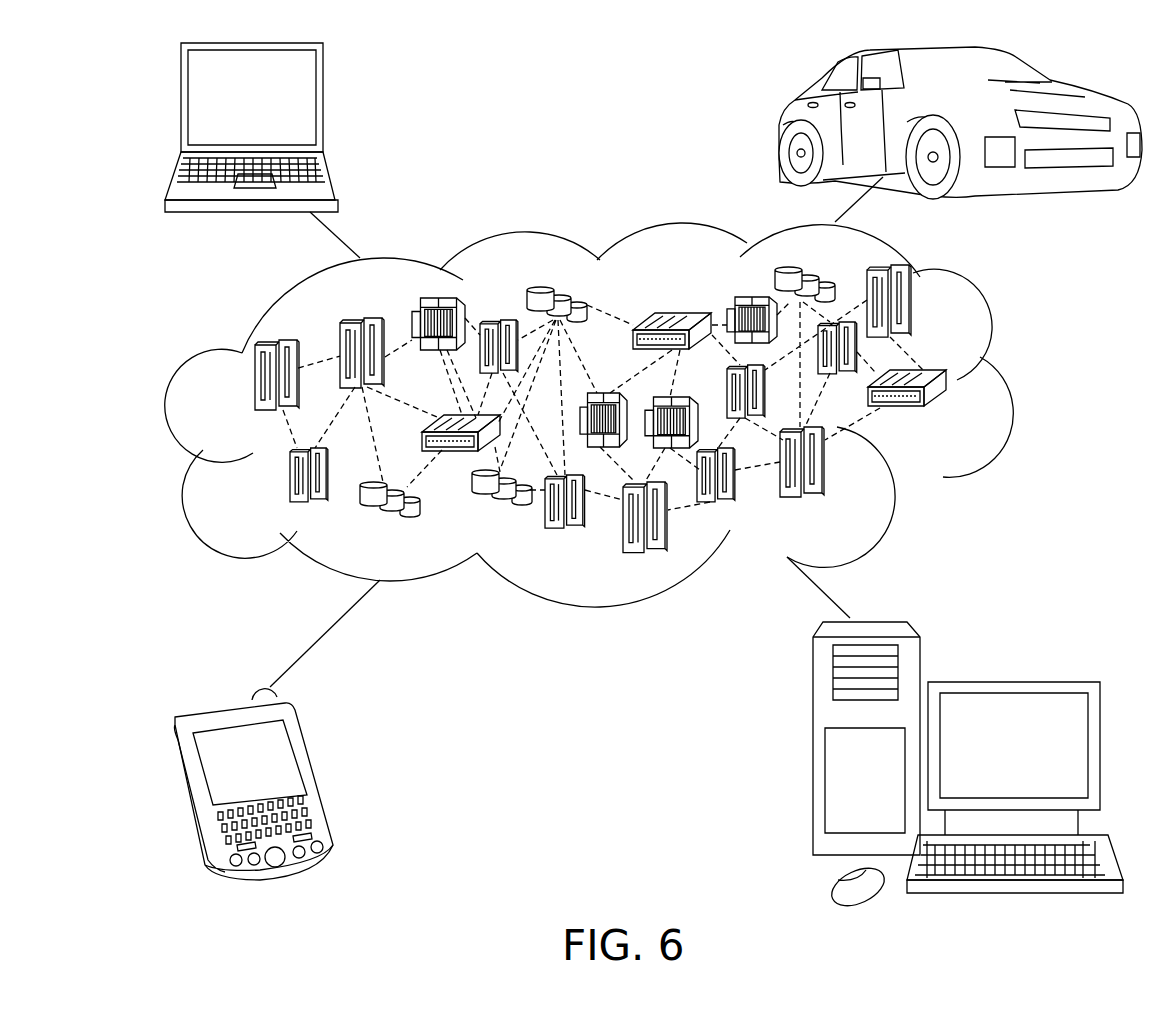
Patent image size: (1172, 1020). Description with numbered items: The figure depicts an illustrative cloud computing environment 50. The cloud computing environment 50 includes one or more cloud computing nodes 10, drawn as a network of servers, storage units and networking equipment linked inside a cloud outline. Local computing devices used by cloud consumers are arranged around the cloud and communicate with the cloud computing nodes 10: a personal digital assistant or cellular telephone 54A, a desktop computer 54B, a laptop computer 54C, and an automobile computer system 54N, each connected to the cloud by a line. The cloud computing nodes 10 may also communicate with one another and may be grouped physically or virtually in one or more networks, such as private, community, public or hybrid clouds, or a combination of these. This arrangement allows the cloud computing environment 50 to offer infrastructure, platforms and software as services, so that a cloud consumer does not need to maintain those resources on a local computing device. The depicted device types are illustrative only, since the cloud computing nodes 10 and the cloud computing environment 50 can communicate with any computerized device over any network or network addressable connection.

The cloud computing environment 50 is at (1012, 385).
The cloud computing nodes 10 is at (960, 420).
The personal digital assistant or cellular telephone 54A is at (315, 778).
The desktop computer 54B is at (1012, 682).
The laptop computer 54C is at (328, 112).
The automobile computer system 54N is at (787, 125).